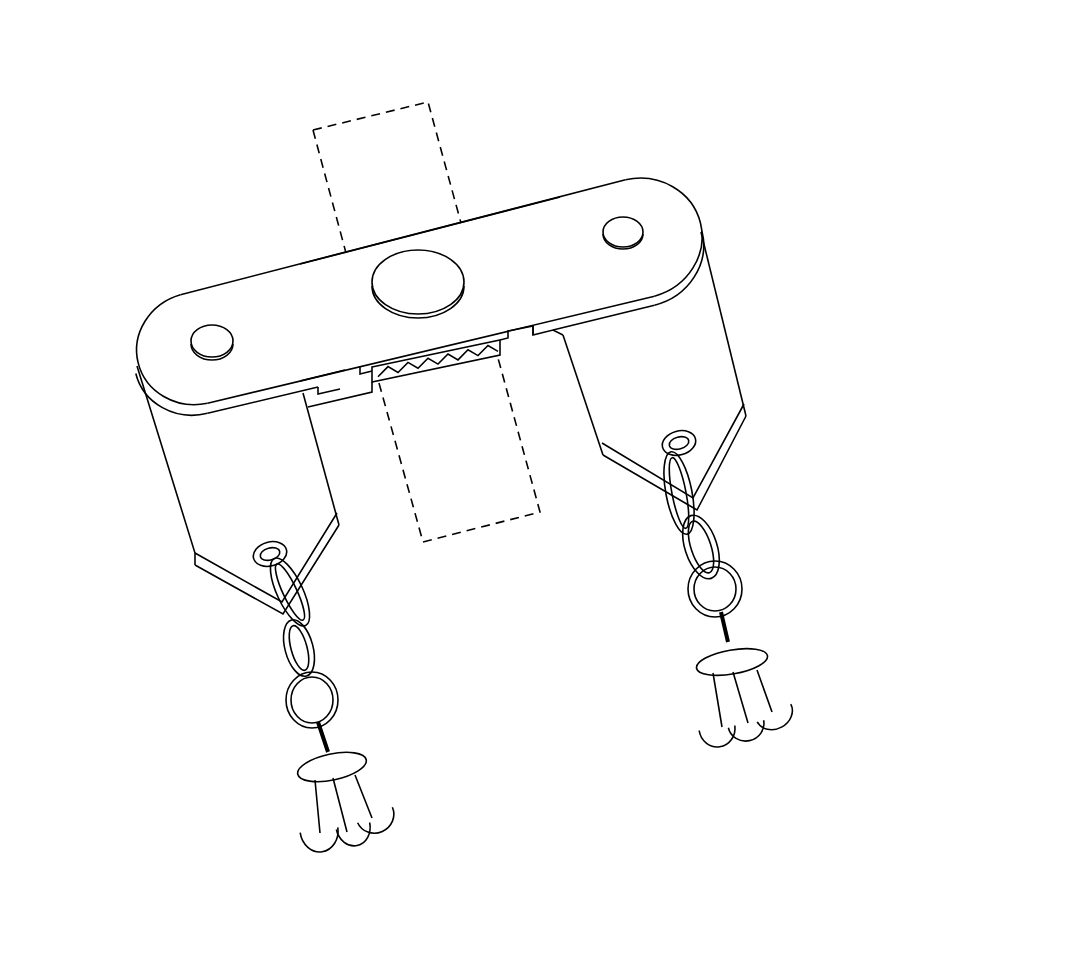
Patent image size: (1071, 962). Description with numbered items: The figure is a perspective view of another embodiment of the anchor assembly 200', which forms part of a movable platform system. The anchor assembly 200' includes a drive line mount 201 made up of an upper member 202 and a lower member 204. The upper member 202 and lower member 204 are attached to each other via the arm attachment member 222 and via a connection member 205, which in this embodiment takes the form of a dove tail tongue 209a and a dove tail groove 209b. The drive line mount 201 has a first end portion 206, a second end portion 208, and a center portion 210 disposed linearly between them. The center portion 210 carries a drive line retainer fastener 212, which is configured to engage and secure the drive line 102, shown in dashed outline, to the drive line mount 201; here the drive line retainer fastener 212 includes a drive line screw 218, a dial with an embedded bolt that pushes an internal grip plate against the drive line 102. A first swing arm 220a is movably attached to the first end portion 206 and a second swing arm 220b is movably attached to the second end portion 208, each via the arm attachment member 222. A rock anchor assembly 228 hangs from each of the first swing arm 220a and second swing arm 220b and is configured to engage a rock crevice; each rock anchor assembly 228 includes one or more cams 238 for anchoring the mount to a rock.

The anchor assembly 200' is at (434, 488).
The drive line mount 201 is at (543, 190).
The upper member 202 is at (673, 208).
The lower member 204 is at (559, 335).
The connection member 205 is at (520, 350).
The first end portion 206 is at (128, 321).
The second end portion 208 is at (712, 219).
The dove tail tongue 209a is at (349, 396).
The dove tail groove 209b is at (334, 364).
The center portion 210 is at (426, 232).
The drive line retainer fastener 212 is at (450, 268).
The drive line screw 218 is at (431, 300).
The arm attachment member 222 is at (620, 215).
The first swing arm 220a is at (197, 502).
The second swing arm 220b is at (714, 349).
The rock anchor assembly 228 is at (281, 740).
The cam 238 is at (315, 847).
The drive line 102 is at (455, 513).